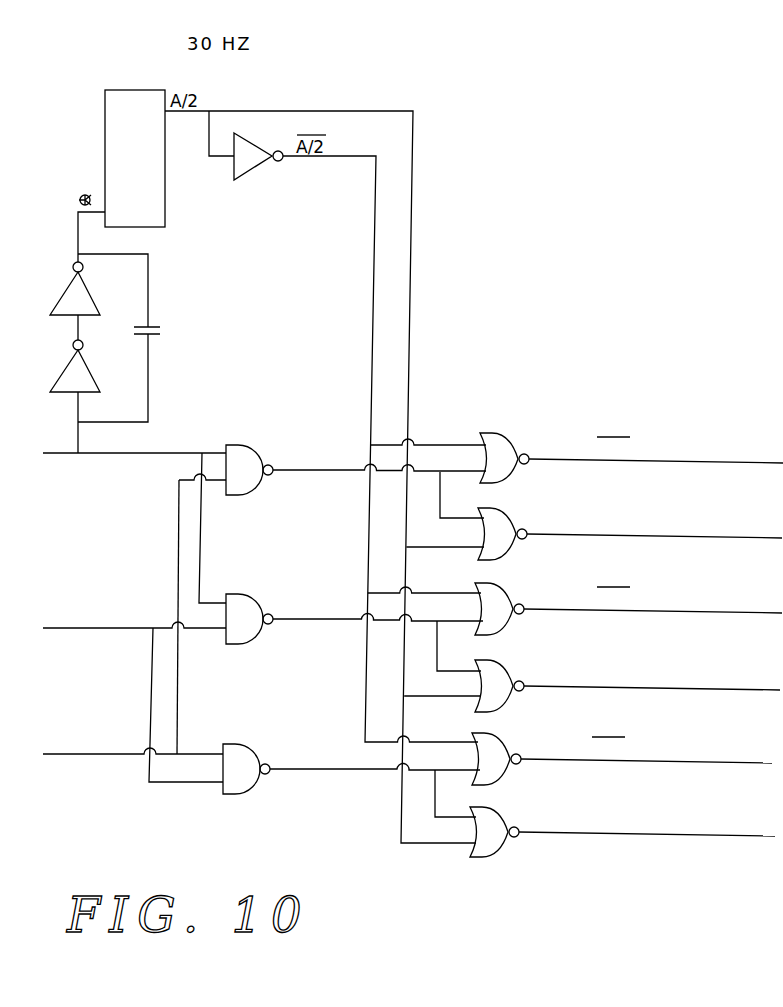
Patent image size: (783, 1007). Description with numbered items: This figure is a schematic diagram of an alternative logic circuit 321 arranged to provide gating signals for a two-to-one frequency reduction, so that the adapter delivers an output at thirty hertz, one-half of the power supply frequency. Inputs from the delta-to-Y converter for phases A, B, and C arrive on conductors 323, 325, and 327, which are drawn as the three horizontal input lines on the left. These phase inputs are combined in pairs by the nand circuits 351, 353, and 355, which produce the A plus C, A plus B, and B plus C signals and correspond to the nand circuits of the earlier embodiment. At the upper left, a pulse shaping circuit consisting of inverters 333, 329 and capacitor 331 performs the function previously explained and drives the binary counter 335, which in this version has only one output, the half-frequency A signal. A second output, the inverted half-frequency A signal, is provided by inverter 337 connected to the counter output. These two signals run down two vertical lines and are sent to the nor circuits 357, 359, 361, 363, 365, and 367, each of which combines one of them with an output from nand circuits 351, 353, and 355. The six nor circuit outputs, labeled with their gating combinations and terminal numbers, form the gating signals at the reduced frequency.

The logic circuit 321 is at (270, 338).
The conductor 323 is at (52, 472).
The conductor 325 is at (45, 647).
The conductor 327 is at (45, 773).
The inverter 329 is at (84, 352).
The capacitor 331 is at (151, 338).
The inverter 333 is at (84, 272).
The binary counter 335 is at (165, 189).
The inverter 337 is at (234, 142).
The nand circuit 351 is at (257, 490).
The nand circuit 353 is at (257, 640).
The nand circuit 355 is at (254, 790).
The nor circuit 357 is at (498, 432).
The nor circuit 359 is at (498, 511).
The nor circuit 361 is at (496, 582).
The nor circuit 363 is at (496, 664).
The nor circuit 365 is at (490, 736).
The nor circuit 367 is at (488, 806).